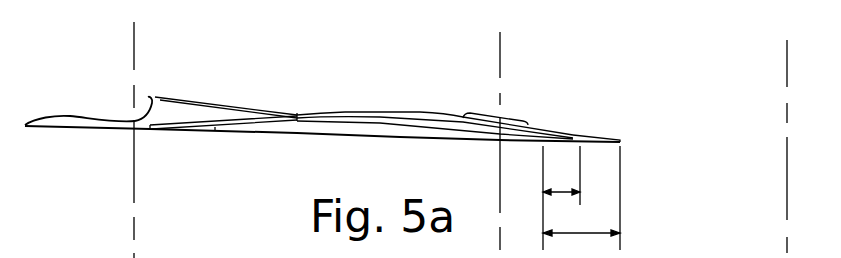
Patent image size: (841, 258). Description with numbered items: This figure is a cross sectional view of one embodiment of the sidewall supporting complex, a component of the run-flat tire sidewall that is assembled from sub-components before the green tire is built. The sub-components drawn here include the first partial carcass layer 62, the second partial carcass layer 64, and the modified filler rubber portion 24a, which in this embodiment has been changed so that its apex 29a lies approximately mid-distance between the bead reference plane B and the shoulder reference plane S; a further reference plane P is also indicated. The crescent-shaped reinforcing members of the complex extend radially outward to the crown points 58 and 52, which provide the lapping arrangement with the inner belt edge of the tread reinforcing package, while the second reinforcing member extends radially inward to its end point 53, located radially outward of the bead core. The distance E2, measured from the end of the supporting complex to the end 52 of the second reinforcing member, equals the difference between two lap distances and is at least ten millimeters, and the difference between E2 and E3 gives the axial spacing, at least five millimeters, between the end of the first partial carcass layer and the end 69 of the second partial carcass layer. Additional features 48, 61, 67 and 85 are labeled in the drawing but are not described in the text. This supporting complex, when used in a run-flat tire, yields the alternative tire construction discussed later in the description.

The filler rubber portion 24a is at (193, 103).
The apex 29a is at (298, 111).
The raised pad 48 is at (510, 118).
The crown point of second reinforcing member 52 is at (535, 143).
The end point of second reinforcing member 53 is at (214, 132).
The crown point of first reinforcing member 58 is at (392, 139).
The tip hook 61 is at (152, 99).
The first partial carcass layer 62 is at (353, 112).
The second partial carcass layer 64 is at (244, 104).
The wedge front end 67 is at (148, 130).
The end of second partial carcass layer 69 is at (574, 135).
The rear end 85 is at (622, 140).
The bead reference plane B is at (134, 58).
The shoulder reference plane S is at (500, 70).
The reference line P is at (787, 78).
The distance from end of supporting complex to end of second reinforcing member E2 is at (581, 198).
The distance defining carcass layer end offset E3 is at (561, 198).